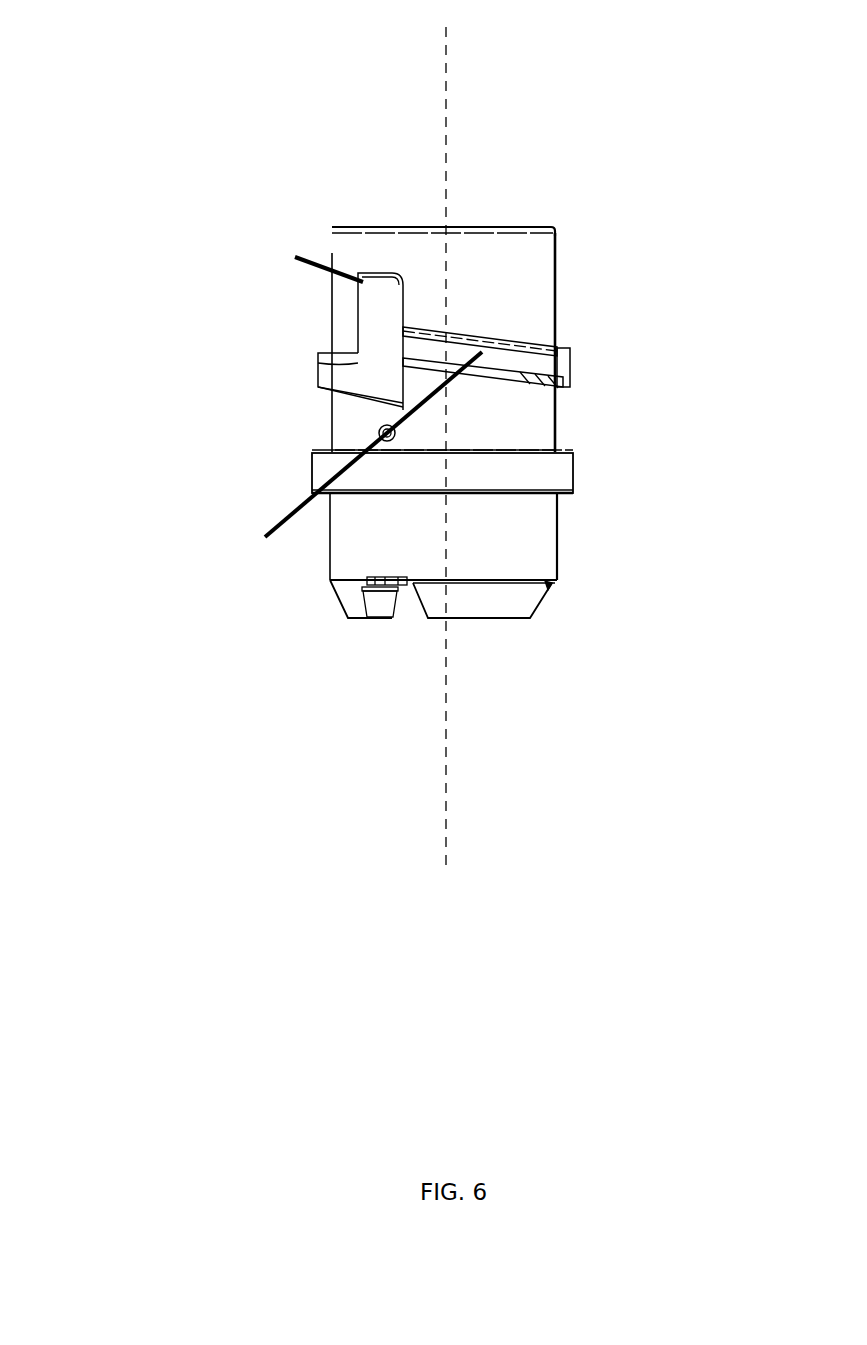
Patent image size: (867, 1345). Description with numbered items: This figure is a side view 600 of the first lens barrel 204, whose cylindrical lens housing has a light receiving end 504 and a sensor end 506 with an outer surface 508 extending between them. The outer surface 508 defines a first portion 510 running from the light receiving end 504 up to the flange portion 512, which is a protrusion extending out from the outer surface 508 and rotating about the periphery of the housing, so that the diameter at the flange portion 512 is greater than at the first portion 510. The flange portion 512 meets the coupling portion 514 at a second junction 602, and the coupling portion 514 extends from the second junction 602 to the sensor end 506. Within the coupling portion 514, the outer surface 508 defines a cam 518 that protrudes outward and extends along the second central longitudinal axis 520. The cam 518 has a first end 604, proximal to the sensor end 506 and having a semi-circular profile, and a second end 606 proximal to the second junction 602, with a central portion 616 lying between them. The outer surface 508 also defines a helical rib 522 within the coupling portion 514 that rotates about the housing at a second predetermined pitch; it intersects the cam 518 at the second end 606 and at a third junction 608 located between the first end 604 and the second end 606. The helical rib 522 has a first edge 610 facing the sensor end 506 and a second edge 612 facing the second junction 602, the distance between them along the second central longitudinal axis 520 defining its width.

The side view 600 is at (238, 100).
The first lens barrel 204 is at (276, 205).
The second central longitudinal axis 520 is at (446, 103).
The sensor end 506 is at (513, 227).
The third junction 608 is at (410, 327).
The coupling portion 514 is at (538, 282).
The first end 604 is at (311, 321).
The central portion 616 is at (372, 338).
The cam 518 is at (366, 343).
The second end 606 is at (335, 392).
The first edge 610 is at (555, 348).
The second edge 612 is at (570, 383).
The second junction 602 is at (530, 448).
The flange portion 512 is at (558, 478).
The first portion 510 is at (540, 553).
The helical rib 522 is at (351, 459).
The outer surface 508 is at (343, 543).
The light receiving end 504 is at (377, 610).